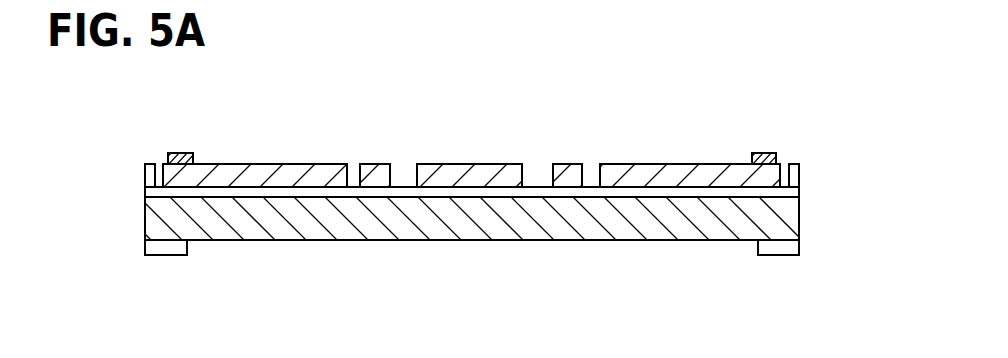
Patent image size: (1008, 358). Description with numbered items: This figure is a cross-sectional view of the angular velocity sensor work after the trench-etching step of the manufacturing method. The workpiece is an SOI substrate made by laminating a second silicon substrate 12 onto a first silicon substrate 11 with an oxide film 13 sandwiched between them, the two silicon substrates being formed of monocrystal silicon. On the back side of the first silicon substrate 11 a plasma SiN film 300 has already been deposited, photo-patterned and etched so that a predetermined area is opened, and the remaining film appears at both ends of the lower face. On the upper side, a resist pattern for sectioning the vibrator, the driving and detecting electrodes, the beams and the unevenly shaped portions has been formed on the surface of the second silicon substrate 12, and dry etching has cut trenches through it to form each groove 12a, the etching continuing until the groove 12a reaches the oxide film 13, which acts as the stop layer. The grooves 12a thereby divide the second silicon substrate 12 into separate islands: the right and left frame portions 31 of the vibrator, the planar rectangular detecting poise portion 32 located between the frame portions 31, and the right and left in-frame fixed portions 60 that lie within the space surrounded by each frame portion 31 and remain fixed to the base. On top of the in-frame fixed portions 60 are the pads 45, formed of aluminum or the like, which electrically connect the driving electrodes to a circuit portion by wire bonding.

The first silicon substrate 11 is at (790, 228).
The oxide film 13 is at (790, 192).
The second silicon substrate 12 is at (797, 173).
The groove 12a is at (353, 164).
The plasma SiN film 300 is at (166, 257).
The in-frame fixed portion 60 is at (284, 164).
The frame portion 31 is at (377, 164).
The detecting poise portion 32 is at (466, 164).
The pad 45 is at (173, 154).